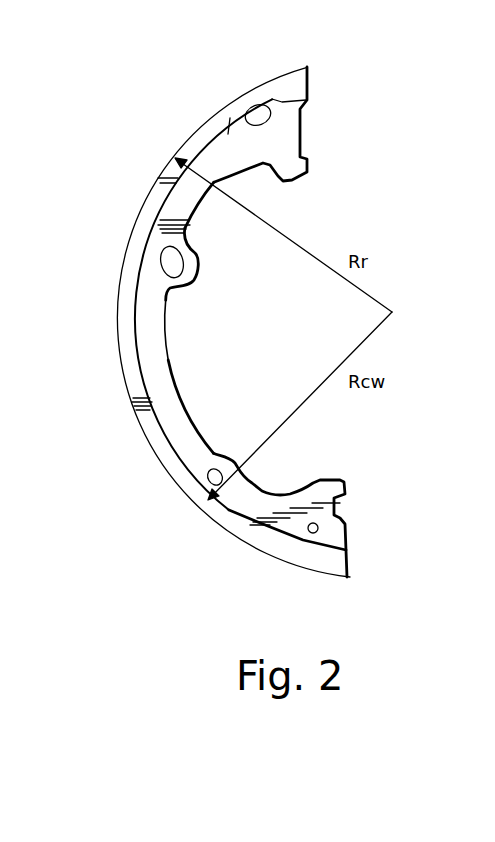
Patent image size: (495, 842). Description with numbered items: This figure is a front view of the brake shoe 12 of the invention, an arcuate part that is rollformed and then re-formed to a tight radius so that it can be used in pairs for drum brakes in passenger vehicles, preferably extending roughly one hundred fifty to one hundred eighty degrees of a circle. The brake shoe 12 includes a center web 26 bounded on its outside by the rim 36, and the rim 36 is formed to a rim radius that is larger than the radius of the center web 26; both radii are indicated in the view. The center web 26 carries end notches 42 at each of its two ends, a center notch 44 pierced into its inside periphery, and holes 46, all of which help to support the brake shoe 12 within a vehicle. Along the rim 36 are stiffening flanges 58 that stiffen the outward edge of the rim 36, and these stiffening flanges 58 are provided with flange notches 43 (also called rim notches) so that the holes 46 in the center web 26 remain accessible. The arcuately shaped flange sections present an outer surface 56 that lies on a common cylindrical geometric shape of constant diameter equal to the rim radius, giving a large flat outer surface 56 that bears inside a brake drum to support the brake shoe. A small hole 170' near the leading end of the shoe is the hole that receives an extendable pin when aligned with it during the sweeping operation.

The brake shoe 12 is at (240, 333).
The center web 26 is at (183, 392).
The rim 36 is at (128, 275).
The end notches 42 is at (300, 133).
The flange notches 43 is at (237, 128).
The center notch 44 is at (167, 347).
The holes 46 is at (254, 112).
The outer surface 56 is at (235, 543).
The stiffening flanges 58 is at (132, 373).
The hole 170' is at (351, 570).